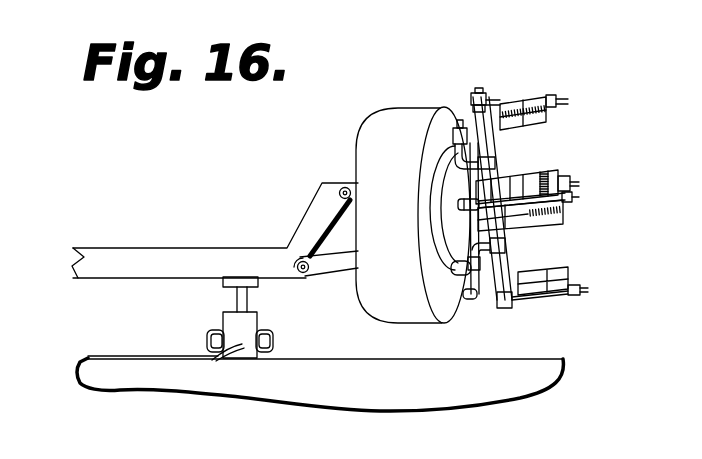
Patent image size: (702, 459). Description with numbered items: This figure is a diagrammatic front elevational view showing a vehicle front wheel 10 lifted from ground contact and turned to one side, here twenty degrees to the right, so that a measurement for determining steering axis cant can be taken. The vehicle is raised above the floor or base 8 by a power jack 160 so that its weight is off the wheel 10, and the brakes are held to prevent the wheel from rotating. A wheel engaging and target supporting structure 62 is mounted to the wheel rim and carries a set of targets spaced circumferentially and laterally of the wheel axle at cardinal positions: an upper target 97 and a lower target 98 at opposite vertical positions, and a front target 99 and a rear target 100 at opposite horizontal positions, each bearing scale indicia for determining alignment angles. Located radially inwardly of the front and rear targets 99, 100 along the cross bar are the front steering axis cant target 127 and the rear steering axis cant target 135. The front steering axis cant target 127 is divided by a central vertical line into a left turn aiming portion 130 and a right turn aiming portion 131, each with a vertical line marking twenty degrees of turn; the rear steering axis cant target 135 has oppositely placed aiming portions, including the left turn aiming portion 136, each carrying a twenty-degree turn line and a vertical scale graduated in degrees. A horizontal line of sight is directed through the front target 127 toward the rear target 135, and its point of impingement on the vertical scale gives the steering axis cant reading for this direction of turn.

The base plate 8 is at (388, 360).
The front wheel 10 is at (388, 122).
The wheel engaging and target supporting structure 62 is at (500, 289).
The upper target 97 is at (550, 113).
The lower target 98 is at (575, 273).
The front target 99 is at (522, 224).
The rear target 100 is at (565, 218).
The front steering axis cant target 127 is at (525, 181).
The left turn aiming portion 130 is at (491, 186).
The right turn aiming portion 131 is at (523, 181).
The rear steering axis cant target 135 is at (562, 189).
The left turn aiming portion 136 is at (557, 180).
The power jack 160 is at (245, 323).